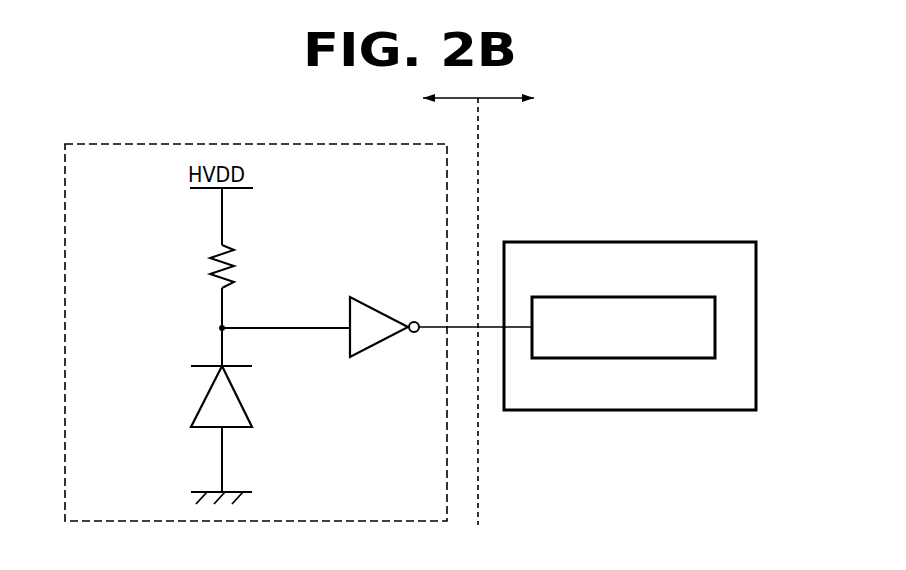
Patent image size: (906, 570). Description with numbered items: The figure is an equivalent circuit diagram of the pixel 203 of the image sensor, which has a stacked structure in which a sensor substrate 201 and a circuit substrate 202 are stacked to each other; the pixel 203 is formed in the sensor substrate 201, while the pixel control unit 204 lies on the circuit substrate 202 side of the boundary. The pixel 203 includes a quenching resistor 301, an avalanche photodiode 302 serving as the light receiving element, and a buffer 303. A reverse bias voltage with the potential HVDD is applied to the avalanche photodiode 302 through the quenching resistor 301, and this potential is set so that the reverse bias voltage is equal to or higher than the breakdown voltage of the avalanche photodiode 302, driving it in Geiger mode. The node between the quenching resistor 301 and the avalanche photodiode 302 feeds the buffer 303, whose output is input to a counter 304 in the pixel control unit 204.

The sensor substrate 201 is at (455, 99).
The circuit substrate 202 is at (531, 305).
The pixel 203 is at (113, 143).
The pixel control unit 204 is at (716, 241).
The quenching resistor 301 is at (208, 262).
The avalanche photodiode 302 is at (204, 392).
The buffer 303 is at (378, 308).
The counter 304 is at (690, 297).